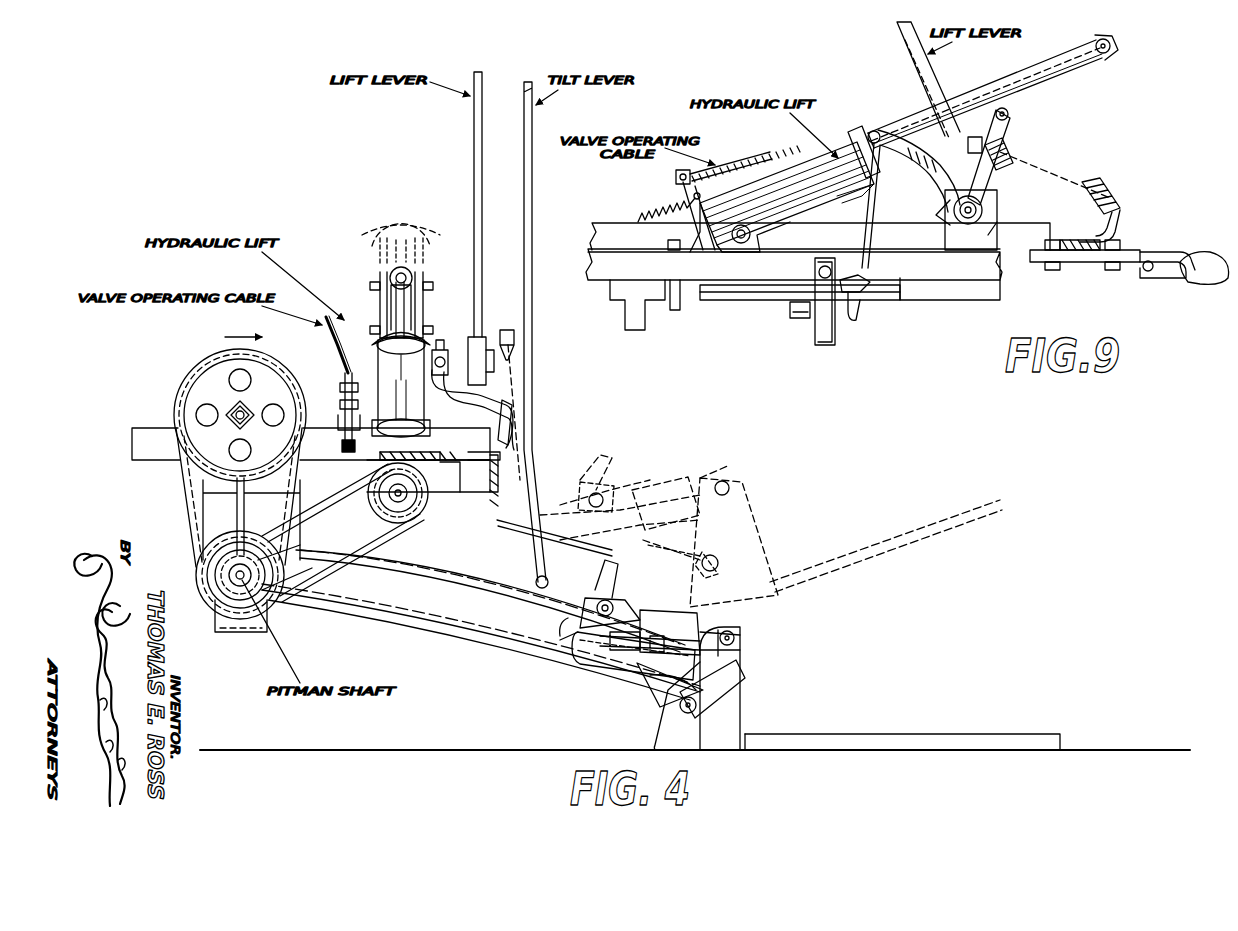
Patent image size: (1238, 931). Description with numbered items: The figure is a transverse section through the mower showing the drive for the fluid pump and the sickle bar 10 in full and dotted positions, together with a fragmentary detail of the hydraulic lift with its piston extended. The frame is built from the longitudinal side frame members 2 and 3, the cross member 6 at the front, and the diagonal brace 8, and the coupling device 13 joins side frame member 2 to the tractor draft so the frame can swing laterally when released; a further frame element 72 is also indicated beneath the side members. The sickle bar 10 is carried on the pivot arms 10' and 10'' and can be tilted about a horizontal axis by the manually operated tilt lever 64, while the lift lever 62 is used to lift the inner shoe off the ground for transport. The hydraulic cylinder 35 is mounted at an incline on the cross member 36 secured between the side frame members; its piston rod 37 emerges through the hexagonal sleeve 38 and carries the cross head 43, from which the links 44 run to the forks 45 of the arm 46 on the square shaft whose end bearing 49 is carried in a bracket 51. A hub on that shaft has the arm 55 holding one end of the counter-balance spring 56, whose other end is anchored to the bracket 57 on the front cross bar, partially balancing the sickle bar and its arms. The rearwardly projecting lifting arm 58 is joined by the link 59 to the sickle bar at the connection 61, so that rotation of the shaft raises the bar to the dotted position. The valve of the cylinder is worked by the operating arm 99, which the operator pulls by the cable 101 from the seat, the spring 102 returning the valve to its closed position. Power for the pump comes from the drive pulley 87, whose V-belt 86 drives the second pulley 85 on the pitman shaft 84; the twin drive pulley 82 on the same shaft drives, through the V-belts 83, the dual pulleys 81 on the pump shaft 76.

In FIG. 4, the side frame member 2 is at (493, 494).
In FIG. 9, the side frame member 2 is at (612, 224).
In FIG. 4, the side frame member 3 is at (140, 441).
In FIG. 9, the side frame member 3 is at (600, 268).
In FIG. 9, the cross member 6 is at (1088, 262).
In FIG. 9, the diagonal brace 8 is at (985, 278).
In FIG. 4, the sickle bar 10 is at (902, 616).
In FIG. 4, the pivot arm 10' is at (481, 642).
In FIG. 4, the pivot arm 10'' is at (490, 601).
In FIG. 9, the coupling device 13 is at (1170, 258).
In FIG. 4, the hydraulic cylinder 35 is at (392, 383).
In FIG. 9, the hydraulic cylinder 35 is at (805, 156).
In FIG. 4, the cross member 36 is at (440, 492).
In FIG. 4, the piston rod 37 is at (412, 306).
In FIG. 9, the piston rod 37 is at (1055, 62).
In FIG. 4, the sleeve 38 is at (396, 312).
In FIG. 9, the sleeve 38 is at (918, 117).
In FIG. 4, the cross head 43 is at (392, 272).
In FIG. 9, the cross head 43 is at (1112, 47).
In FIG. 4, the links 44 is at (380, 298).
In FIG. 9, the links 44 is at (1075, 80).
In FIG. 9, the forks 45 is at (1010, 128).
In FIG. 9, the arm 46 is at (1018, 143).
In FIG. 9, the end bearing 49 is at (983, 205).
In FIG. 9, the bracket 51 is at (999, 218).
In FIG. 4, the arm 55 is at (452, 346).
In FIG. 9, the arm 55 is at (972, 136).
In FIG. 9, the spring 56 is at (1098, 182).
In FIG. 9, the bracket 57 is at (1118, 224).
In FIG. 4, the lifting arm 58 is at (515, 335).
In FIG. 9, the lifting arm 58 is at (925, 178).
In FIG. 4, the link 59 is at (520, 365).
In FIG. 9, the link 59 is at (869, 212).
In FIG. 4, the link connection 61 is at (536, 582).
In FIG. 9, the link connection 61 is at (872, 308).
In FIG. 4, the lift lever 62 is at (474, 112).
In FIG. 9, the lift lever 62 is at (898, 45).
In FIG. 4, the tilt lever 64 is at (535, 116).
In FIG. 4, the cross rod 72 is at (432, 468).
In FIG. 9, the cross rod 72 is at (690, 302).
In FIG. 4, the shaft 76 is at (395, 493).
In FIG. 4, the dual pulleys 81 is at (402, 522).
In FIG. 4, the drive pulley 82 is at (220, 590).
In FIG. 4, the V-belts 83 is at (318, 580).
In FIG. 4, the pitman shaft 84 is at (240, 580).
In FIG. 4, the second pulley 85 is at (198, 565).
In FIG. 4, the V-belt 86 is at (192, 503).
In FIG. 4, the drive pulley 87 is at (210, 385).
In FIG. 4, the operating arm 99 is at (352, 373).
In FIG. 9, the operating arm 99 is at (700, 182).
In FIG. 4, the cable 101 is at (338, 340).
In FIG. 9, the cable 101 is at (752, 156).
In FIG. 9, the spring 102 is at (665, 212).